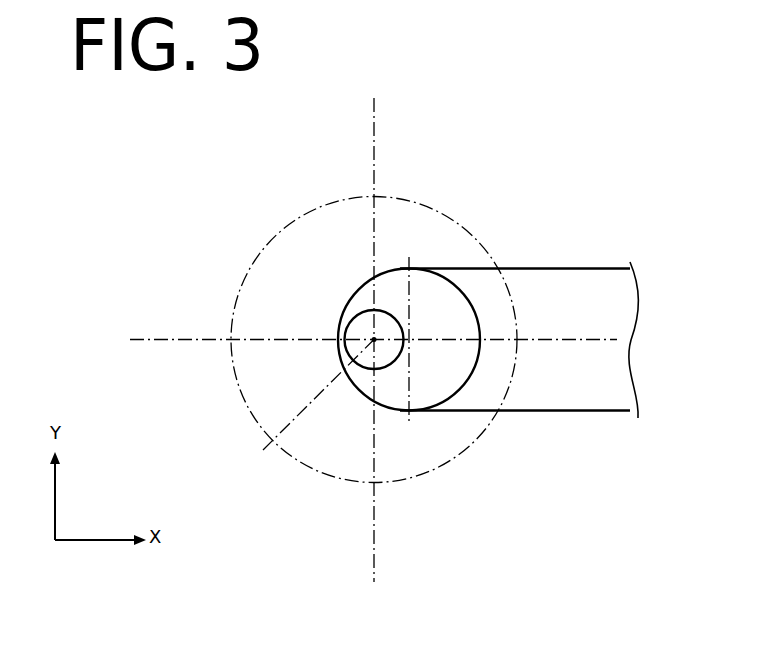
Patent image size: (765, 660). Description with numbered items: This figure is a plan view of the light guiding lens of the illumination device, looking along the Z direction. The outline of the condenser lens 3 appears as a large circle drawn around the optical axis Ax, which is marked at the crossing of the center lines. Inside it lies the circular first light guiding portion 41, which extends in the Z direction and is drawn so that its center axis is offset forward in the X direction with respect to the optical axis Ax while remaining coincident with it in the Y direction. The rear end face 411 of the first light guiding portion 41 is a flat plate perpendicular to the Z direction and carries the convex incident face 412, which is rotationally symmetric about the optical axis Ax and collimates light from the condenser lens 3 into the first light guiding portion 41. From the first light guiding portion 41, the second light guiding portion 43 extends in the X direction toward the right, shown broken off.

The condenser lens 3 is at (311, 212).
The first light guiding portion 41 is at (453, 283).
The rear end face 411 is at (393, 282).
The incident face 412 is at (369, 362).
The second light guiding portion 43 is at (573, 411).
The optical axis Ax is at (306, 408).